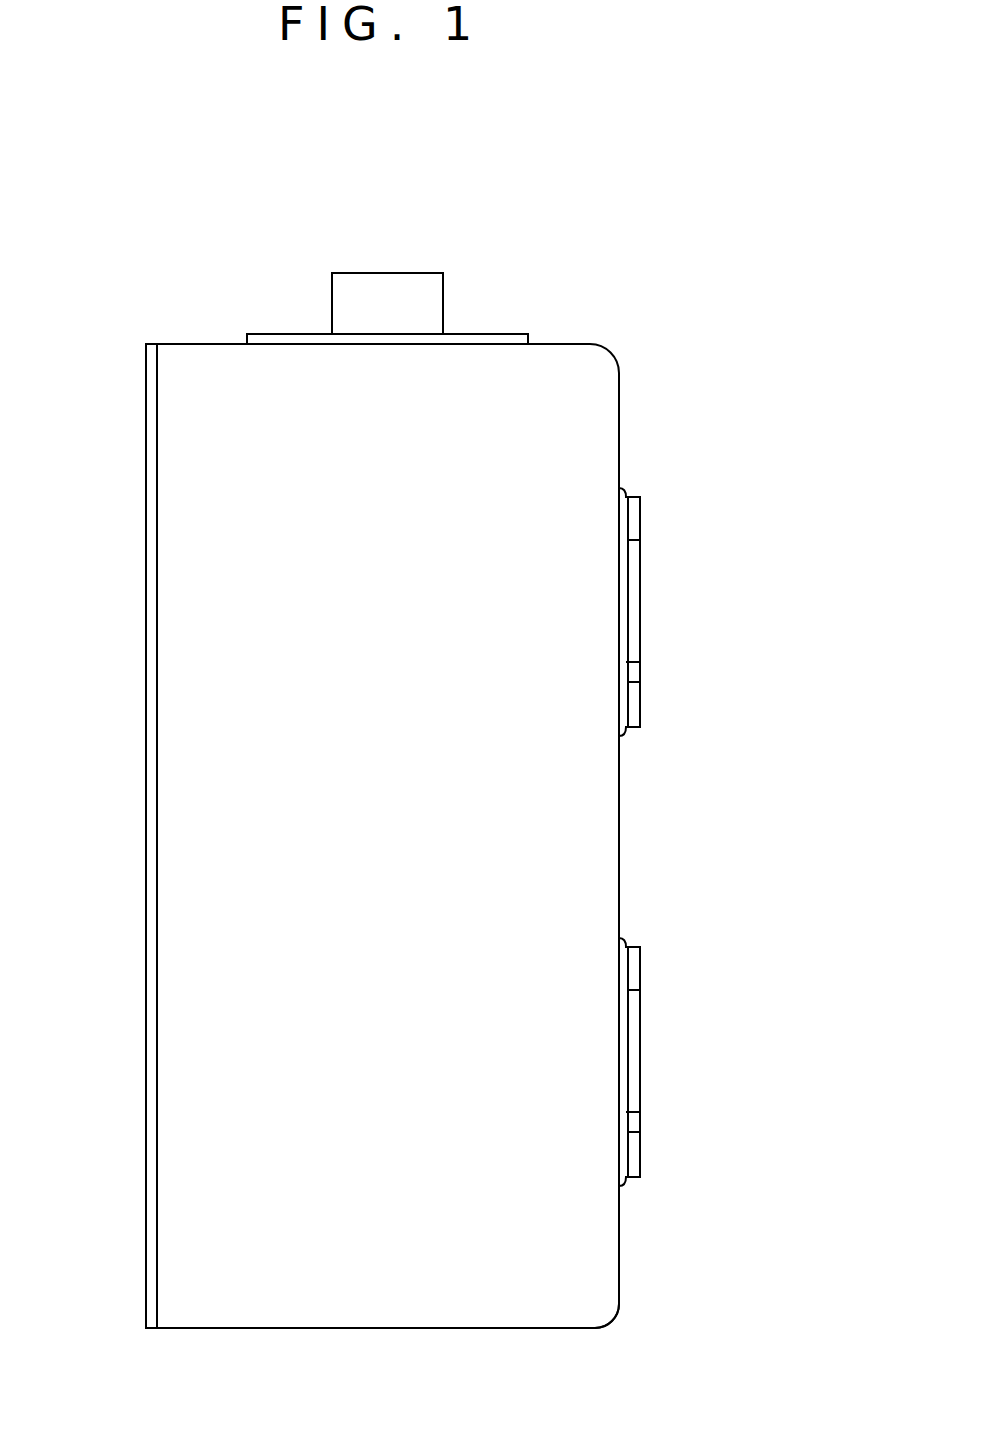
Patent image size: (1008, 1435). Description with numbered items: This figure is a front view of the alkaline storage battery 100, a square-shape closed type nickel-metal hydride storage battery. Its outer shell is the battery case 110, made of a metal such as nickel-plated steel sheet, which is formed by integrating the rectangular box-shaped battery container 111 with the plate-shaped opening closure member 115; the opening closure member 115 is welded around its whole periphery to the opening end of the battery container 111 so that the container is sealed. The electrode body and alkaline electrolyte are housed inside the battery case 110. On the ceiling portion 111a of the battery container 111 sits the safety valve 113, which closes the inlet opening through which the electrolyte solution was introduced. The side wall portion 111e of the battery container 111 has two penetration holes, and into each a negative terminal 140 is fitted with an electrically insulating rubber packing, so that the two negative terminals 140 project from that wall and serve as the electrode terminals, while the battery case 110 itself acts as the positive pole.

The alkaline storage battery 100 is at (568, 313).
The battery case 110 is at (207, 377).
The battery container 111 is at (590, 408).
The ceiling portion 111a is at (232, 345).
The side wall portion 111e is at (620, 1275).
The safety valve 113 is at (397, 288).
The opening closure member 115 is at (145, 450).
The negative terminal 140 is at (642, 698).